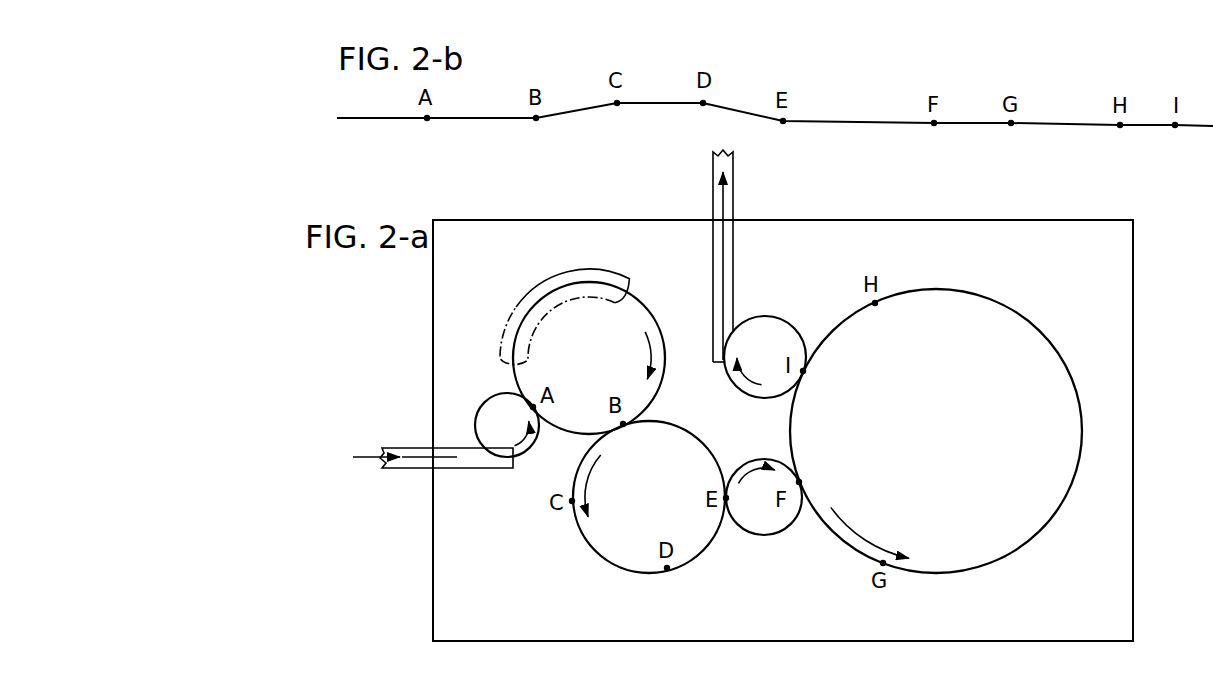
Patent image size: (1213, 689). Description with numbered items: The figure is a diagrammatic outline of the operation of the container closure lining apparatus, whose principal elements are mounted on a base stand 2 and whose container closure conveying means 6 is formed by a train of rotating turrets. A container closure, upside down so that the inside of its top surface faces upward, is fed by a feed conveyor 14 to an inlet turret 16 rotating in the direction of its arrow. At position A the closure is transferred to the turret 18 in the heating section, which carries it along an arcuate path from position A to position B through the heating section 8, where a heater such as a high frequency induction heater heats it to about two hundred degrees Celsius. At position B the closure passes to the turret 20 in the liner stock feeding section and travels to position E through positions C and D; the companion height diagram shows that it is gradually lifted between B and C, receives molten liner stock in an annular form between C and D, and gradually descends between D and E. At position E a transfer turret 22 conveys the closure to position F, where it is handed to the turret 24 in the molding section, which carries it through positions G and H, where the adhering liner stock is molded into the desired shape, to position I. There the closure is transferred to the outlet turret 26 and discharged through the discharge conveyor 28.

The base stand 2 is at (1133, 297).
The container closure conveying means 6 is at (575, 561).
The heating section 8 is at (557, 280).
The feed conveyor 14 is at (478, 469).
The inlet turret 16 is at (487, 408).
The turret in the heating section 18 is at (636, 310).
The turret in the liner stock feeding section 20 is at (700, 548).
The transfer turret 22 is at (778, 528).
The turret in the molding section 24 is at (1035, 526).
The outlet turret 26 is at (788, 332).
The discharge conveyor 28 is at (735, 172).